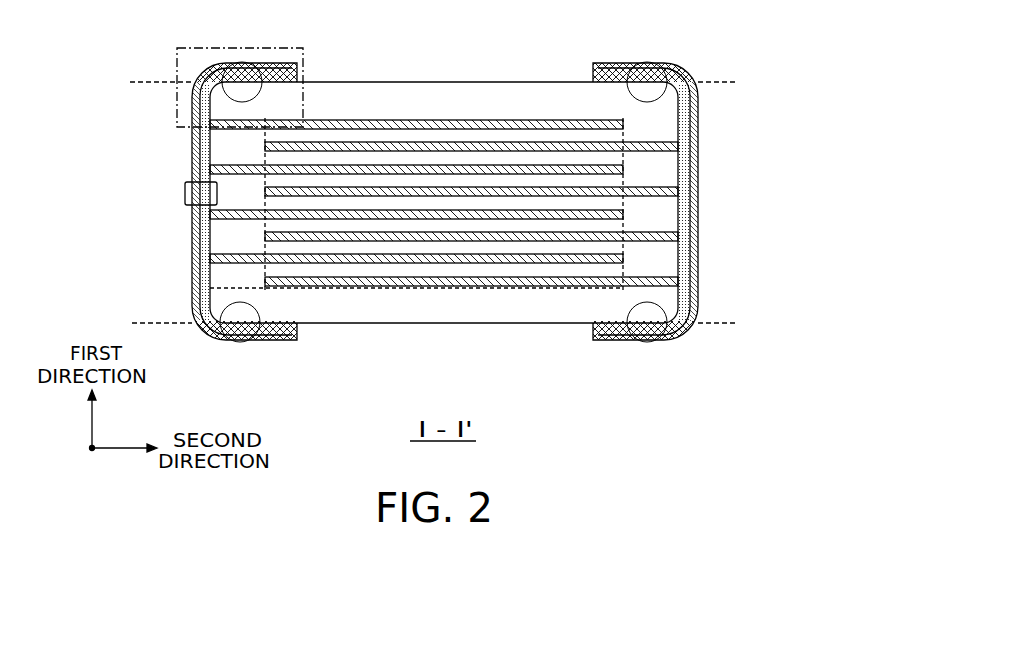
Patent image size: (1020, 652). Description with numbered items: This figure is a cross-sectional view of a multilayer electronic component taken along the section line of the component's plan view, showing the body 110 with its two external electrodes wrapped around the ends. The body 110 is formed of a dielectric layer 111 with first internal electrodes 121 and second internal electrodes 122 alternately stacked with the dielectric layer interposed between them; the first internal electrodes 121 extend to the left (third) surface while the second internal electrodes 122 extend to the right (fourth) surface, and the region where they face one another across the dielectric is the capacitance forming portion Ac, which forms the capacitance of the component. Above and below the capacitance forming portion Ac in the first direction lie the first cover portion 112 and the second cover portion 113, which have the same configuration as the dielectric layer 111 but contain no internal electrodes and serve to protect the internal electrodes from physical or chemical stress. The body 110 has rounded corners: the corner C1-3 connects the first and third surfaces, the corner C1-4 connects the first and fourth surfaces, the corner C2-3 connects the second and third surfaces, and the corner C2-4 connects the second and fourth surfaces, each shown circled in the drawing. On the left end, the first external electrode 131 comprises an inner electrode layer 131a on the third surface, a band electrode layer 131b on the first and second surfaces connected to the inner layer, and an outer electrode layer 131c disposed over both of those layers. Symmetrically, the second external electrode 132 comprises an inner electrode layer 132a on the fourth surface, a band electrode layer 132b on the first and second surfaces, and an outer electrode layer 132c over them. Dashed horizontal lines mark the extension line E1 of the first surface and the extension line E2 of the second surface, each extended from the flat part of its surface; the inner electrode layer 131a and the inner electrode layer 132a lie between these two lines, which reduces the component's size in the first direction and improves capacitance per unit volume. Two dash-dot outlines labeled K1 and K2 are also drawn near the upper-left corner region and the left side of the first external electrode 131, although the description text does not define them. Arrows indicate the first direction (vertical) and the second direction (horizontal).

The body 110 is at (444, 191).
The dielectric layer 111 is at (310, 155).
The first cover portion 112 is at (440, 87).
The second cover portion 113 is at (457, 307).
The first internal electrode 121 is at (488, 120).
The second internal electrode 122 is at (555, 147).
The first external electrode 131 is at (165, 201).
The 1-1-th electrode layer 131a is at (203, 242).
The 1-2-th electrode layer 131b is at (196, 326).
The 1-3-th electrode layer 131c is at (200, 268).
The second external electrode 132 is at (715, 201).
The 2-1-th electrode layer 132a is at (686, 250).
The 2-2-th electrode layer 132b is at (692, 322).
The 2-3-th electrode layer 132c is at (688, 278).
The capacitance forming portion Ac is at (542, 288).
The first region K1 is at (177, 57).
The second region K2 is at (185, 193).
The extension line of the first surface E1 is at (433, 82).
The extension line of the second surface E2 is at (434, 324).
The 1-3-th corner C1-3 is at (263, 66).
The 1-4 corner C1-4 is at (628, 65).
The 2-3-th corner C2-3 is at (262, 340).
The 2-4 corner C2-4 is at (627, 334).